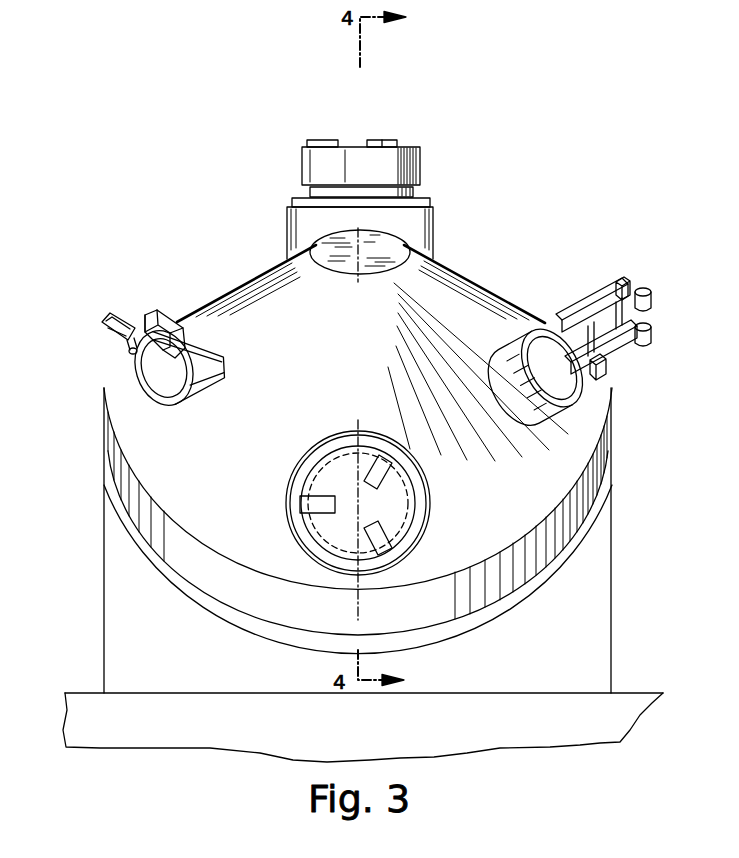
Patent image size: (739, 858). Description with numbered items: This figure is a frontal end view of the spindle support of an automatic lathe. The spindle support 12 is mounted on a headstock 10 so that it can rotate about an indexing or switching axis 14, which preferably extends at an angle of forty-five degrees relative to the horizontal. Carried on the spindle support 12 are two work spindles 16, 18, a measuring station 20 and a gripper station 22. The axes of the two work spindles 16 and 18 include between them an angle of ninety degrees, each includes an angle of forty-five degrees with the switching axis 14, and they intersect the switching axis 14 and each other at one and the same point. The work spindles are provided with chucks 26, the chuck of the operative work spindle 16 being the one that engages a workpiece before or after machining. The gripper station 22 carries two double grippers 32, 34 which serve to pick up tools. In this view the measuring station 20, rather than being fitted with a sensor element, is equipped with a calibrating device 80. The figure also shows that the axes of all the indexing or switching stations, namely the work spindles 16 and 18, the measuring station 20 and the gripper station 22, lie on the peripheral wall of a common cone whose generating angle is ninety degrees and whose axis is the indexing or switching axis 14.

The headstock 10 is at (498, 733).
The spindle support 12 is at (486, 280).
The indexing or switching axis 14 is at (362, 250).
The work spindle 16 is at (280, 473).
The work spindle 18 is at (294, 157).
The measuring station 20 is at (170, 302).
The gripper station 22 is at (573, 298).
The chuck 26 is at (378, 140).
The double gripper 32 is at (645, 288).
The double gripper 34 is at (647, 343).
The calibrating device 80 is at (130, 354).